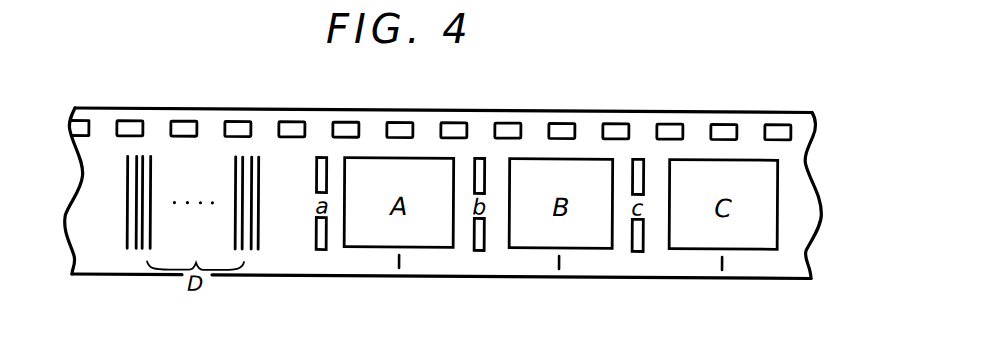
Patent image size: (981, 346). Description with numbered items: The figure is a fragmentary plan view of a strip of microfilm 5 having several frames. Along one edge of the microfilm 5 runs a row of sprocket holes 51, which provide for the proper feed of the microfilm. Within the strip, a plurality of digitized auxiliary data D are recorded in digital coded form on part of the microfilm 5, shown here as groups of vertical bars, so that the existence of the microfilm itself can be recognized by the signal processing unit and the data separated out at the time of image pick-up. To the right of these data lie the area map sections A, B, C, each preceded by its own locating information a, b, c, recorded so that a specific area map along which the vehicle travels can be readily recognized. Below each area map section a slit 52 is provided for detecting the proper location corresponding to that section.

The microfilm 5 is at (562, 109).
The sprocket holes 51 is at (292, 118).
The slits 52 is at (402, 259).